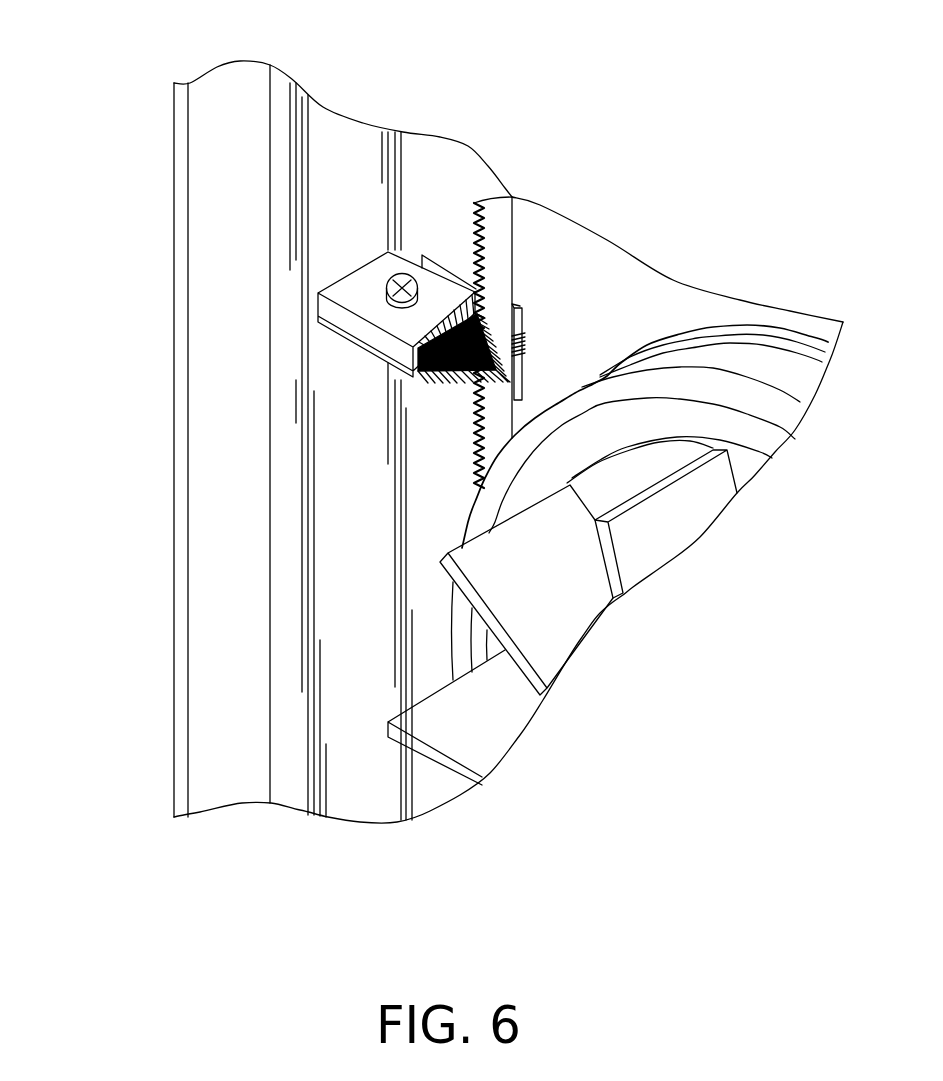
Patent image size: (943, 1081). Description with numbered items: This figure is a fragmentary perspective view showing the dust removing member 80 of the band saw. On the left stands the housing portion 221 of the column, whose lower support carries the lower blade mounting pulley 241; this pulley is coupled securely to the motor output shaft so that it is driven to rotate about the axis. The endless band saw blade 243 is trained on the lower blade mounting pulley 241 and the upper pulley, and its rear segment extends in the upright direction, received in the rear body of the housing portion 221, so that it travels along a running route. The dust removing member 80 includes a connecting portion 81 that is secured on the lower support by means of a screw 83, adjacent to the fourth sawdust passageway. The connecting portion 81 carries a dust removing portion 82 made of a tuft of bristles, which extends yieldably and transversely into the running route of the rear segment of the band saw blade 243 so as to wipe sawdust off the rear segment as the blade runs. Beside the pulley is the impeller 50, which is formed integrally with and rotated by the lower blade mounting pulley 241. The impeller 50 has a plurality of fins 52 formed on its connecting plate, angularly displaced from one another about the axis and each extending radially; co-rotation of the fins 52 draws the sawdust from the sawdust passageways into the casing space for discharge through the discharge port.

The housing portion 221 is at (177, 166).
The dust removing member 80 is at (340, 281).
The screw 83 is at (397, 276).
The connecting portion 81 is at (432, 253).
The dust removing portion 82 is at (452, 376).
The endless band saw blade 243 is at (503, 258).
The lower blade mounting pulley 241 is at (783, 337).
The impeller 50 is at (427, 763).
The fins 52 is at (475, 725).